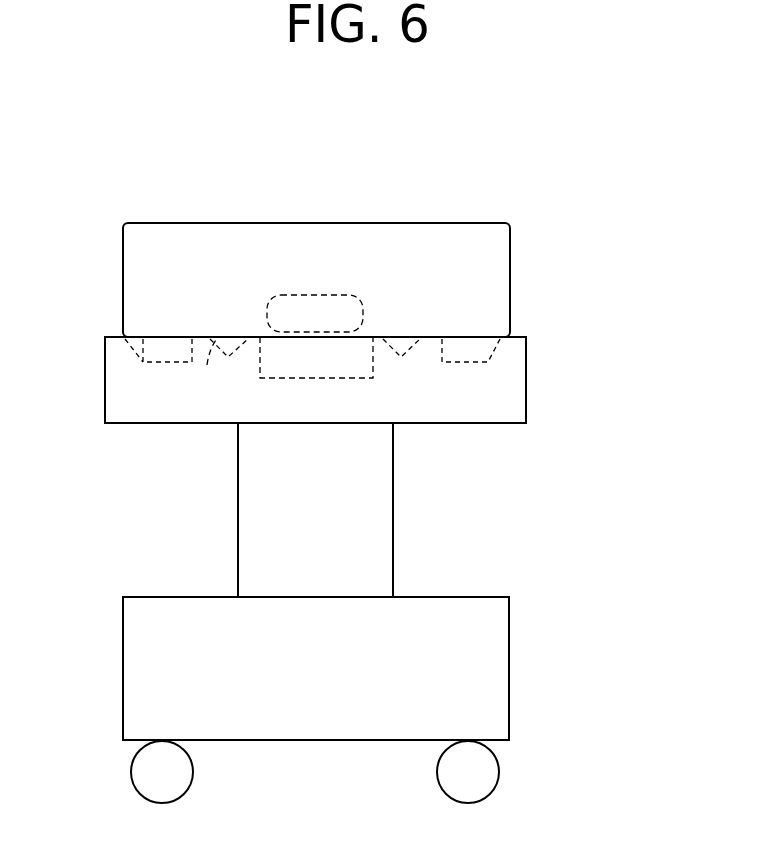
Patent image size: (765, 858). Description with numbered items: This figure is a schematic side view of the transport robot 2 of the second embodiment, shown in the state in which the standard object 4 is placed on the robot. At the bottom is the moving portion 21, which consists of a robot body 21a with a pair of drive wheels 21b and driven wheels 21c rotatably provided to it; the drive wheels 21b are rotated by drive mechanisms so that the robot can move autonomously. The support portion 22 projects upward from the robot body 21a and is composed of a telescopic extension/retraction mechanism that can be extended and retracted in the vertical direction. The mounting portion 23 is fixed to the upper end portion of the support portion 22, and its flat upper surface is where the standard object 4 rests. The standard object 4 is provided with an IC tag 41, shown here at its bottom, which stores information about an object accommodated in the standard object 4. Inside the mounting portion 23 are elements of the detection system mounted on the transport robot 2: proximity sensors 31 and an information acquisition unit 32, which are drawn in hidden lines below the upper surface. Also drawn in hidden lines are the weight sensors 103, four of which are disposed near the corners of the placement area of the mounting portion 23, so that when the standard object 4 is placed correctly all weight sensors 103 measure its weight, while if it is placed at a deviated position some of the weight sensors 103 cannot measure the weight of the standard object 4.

The transport robot 2 is at (557, 129).
The standard object 4 is at (487, 255).
The IC tag 41 is at (312, 306).
The mounting portion 23 is at (512, 403).
The weight sensors 103 is at (168, 362).
The proximity sensors 31 is at (207, 365).
The information acquisition unit 32 is at (330, 368).
The support portion 22 is at (253, 559).
The moving portion 21 is at (527, 612).
The robot body 21a is at (500, 663).
The drive wheels 21b is at (148, 773).
The driven wheels 21c is at (488, 773).